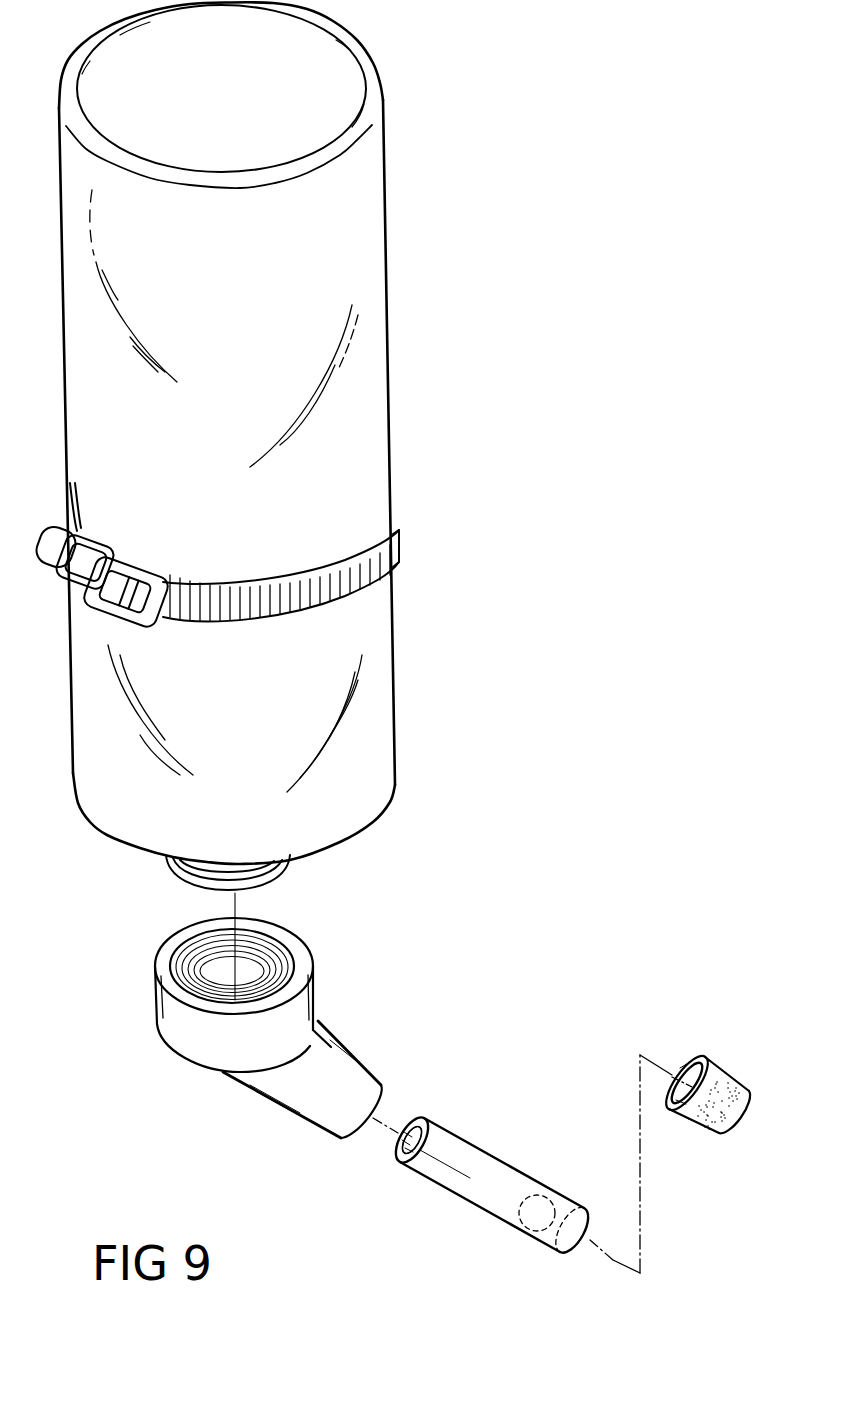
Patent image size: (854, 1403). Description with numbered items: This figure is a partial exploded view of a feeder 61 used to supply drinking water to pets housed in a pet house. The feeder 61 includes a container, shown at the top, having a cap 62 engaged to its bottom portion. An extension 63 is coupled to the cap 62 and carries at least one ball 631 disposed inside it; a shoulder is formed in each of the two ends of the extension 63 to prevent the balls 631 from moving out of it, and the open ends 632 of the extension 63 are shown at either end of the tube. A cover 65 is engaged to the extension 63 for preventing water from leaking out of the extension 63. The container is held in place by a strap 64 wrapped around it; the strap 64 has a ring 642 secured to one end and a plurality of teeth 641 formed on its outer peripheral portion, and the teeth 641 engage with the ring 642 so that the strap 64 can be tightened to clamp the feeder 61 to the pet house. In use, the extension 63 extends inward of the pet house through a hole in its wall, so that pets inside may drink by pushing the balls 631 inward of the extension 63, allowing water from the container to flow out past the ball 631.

The feeder 61 is at (372, 255).
The cap 62 is at (210, 1062).
The extension 63 is at (495, 1200).
The ball 631 is at (533, 1222).
The open end of tube 632 is at (413, 1118).
The strap 64 is at (216, 595).
The teeth 641 is at (282, 622).
The ring 642 is at (150, 636).
The cover 65 is at (725, 1132).